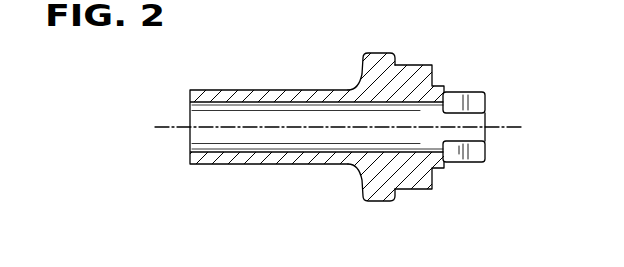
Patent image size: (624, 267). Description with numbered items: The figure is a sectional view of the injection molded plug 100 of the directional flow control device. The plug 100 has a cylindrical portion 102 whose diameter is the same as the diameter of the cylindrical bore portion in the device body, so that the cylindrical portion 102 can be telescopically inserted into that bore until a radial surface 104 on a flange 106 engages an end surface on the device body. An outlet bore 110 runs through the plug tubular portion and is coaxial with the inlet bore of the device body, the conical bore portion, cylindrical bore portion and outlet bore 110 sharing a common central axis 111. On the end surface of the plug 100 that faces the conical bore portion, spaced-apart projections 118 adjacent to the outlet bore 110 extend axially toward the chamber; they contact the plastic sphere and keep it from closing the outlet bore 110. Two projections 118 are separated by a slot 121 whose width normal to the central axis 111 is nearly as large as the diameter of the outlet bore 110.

The plug 100 is at (380, 53).
The cylindrical portion 102 is at (413, 65).
The radial surface 104 is at (397, 192).
The flange 106 is at (380, 202).
The outlet bore 110 is at (197, 152).
The central axis 111 is at (176, 127).
The projections 118 is at (485, 148).
The slot 121 is at (476, 104).